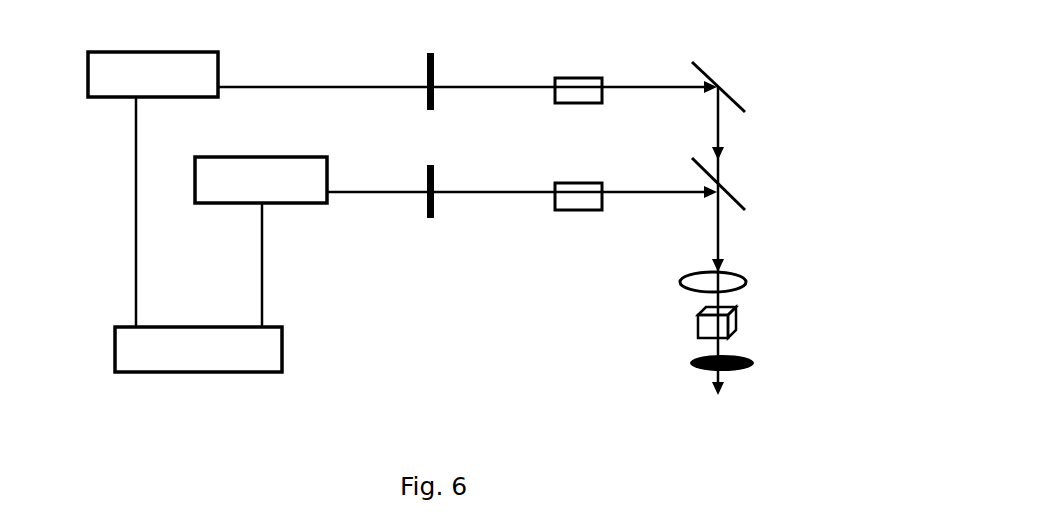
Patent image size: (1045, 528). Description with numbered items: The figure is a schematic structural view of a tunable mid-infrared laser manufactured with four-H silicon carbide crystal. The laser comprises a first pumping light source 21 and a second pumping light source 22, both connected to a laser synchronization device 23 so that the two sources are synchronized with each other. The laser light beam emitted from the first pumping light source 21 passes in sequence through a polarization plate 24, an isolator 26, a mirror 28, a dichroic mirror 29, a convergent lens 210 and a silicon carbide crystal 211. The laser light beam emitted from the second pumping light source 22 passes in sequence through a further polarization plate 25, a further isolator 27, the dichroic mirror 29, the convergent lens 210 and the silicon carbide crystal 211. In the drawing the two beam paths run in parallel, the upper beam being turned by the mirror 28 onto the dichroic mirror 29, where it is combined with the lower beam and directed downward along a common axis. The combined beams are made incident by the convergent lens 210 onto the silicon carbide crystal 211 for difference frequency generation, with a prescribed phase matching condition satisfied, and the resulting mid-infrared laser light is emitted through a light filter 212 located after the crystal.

The first pumping light source 21 is at (153, 74).
The second pumping light source 22 is at (261, 180).
The laser synchronization device 23 is at (198, 349).
The polarization plate 24 is at (380, 91).
The further polarization plate 25 is at (380, 181).
The isolator 26 is at (526, 104).
The further isolator 27 is at (526, 177).
The mirror 28 is at (737, 87).
The dichroic mirror 29 is at (742, 184).
The convergent lens 210 is at (748, 277).
The 4H silicon carbide crystal 211 is at (757, 322).
The light filter 212 is at (753, 364).